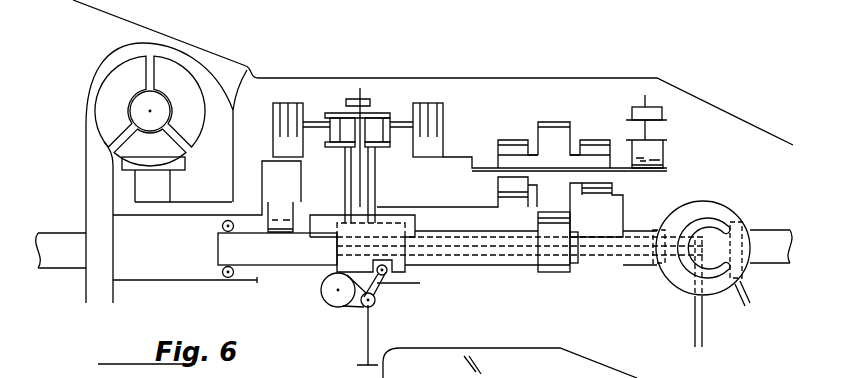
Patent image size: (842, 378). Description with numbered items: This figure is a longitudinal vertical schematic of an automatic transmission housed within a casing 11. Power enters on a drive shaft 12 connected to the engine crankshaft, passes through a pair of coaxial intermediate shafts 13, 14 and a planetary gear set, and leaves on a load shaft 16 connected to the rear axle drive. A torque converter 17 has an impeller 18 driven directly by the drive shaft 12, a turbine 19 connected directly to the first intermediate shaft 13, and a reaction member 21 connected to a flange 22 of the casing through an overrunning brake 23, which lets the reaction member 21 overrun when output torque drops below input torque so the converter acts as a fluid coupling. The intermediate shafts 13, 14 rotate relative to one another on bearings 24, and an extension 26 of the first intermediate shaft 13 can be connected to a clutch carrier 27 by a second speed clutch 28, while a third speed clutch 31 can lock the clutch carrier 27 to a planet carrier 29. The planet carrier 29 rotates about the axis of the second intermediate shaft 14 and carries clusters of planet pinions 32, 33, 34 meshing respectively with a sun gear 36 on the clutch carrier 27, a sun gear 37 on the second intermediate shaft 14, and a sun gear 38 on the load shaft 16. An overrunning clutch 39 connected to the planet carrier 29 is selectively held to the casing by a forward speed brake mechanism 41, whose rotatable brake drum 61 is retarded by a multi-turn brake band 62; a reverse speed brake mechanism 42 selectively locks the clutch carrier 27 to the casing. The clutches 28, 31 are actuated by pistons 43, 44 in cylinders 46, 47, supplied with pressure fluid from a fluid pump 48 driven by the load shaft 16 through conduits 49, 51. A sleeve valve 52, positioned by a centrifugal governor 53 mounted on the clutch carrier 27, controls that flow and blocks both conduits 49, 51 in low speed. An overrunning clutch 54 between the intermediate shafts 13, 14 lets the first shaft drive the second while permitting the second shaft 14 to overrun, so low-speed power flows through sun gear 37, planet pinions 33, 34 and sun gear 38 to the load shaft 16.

The casing 11 is at (600, 78).
The drive shaft 12 is at (57, 266).
The first intermediate shaft 13 is at (153, 275).
The second intermediate shaft 14 is at (310, 258).
The load shaft 16 is at (778, 240).
The torque converter 17 is at (194, 67).
The impeller 18 is at (188, 104).
The turbine 19 is at (122, 104).
The reaction member 21 is at (158, 154).
The flange 22 is at (233, 157).
The overrunning brake 23 is at (170, 191).
The bearings 24 is at (222, 225).
The extension 26 is at (268, 161).
The clutch carrier 27 is at (318, 104).
The second speed clutch 28 is at (290, 123).
The planet carrier 29 is at (473, 166).
The third speed clutch 31 is at (438, 120).
The planet pinions 32 is at (512, 140).
The planet pinions 33 is at (552, 123).
The planet pinions 34 is at (587, 142).
The sun gear 36 is at (510, 204).
The sun gear 37 is at (548, 272).
The sun gear 38 is at (593, 194).
The overrunning clutch 39 is at (663, 158).
The forward speed brake mechanism 41 is at (670, 108).
The reverse speed brake mechanism 42 is at (366, 97).
The piston 43 is at (336, 133).
The piston 44 is at (385, 127).
The cylinder 46 is at (344, 146).
The cylinder 47 is at (376, 147).
The fluid pump 48 is at (712, 205).
The conduit 49 is at (585, 262).
The conduit 51 is at (618, 242).
The sleeve valve 52 is at (361, 257).
The centrifugal governor 53 is at (360, 306).
The overrunning clutch 54 is at (280, 236).
The brake drum 61 is at (667, 120).
The brake band 62 is at (648, 107).